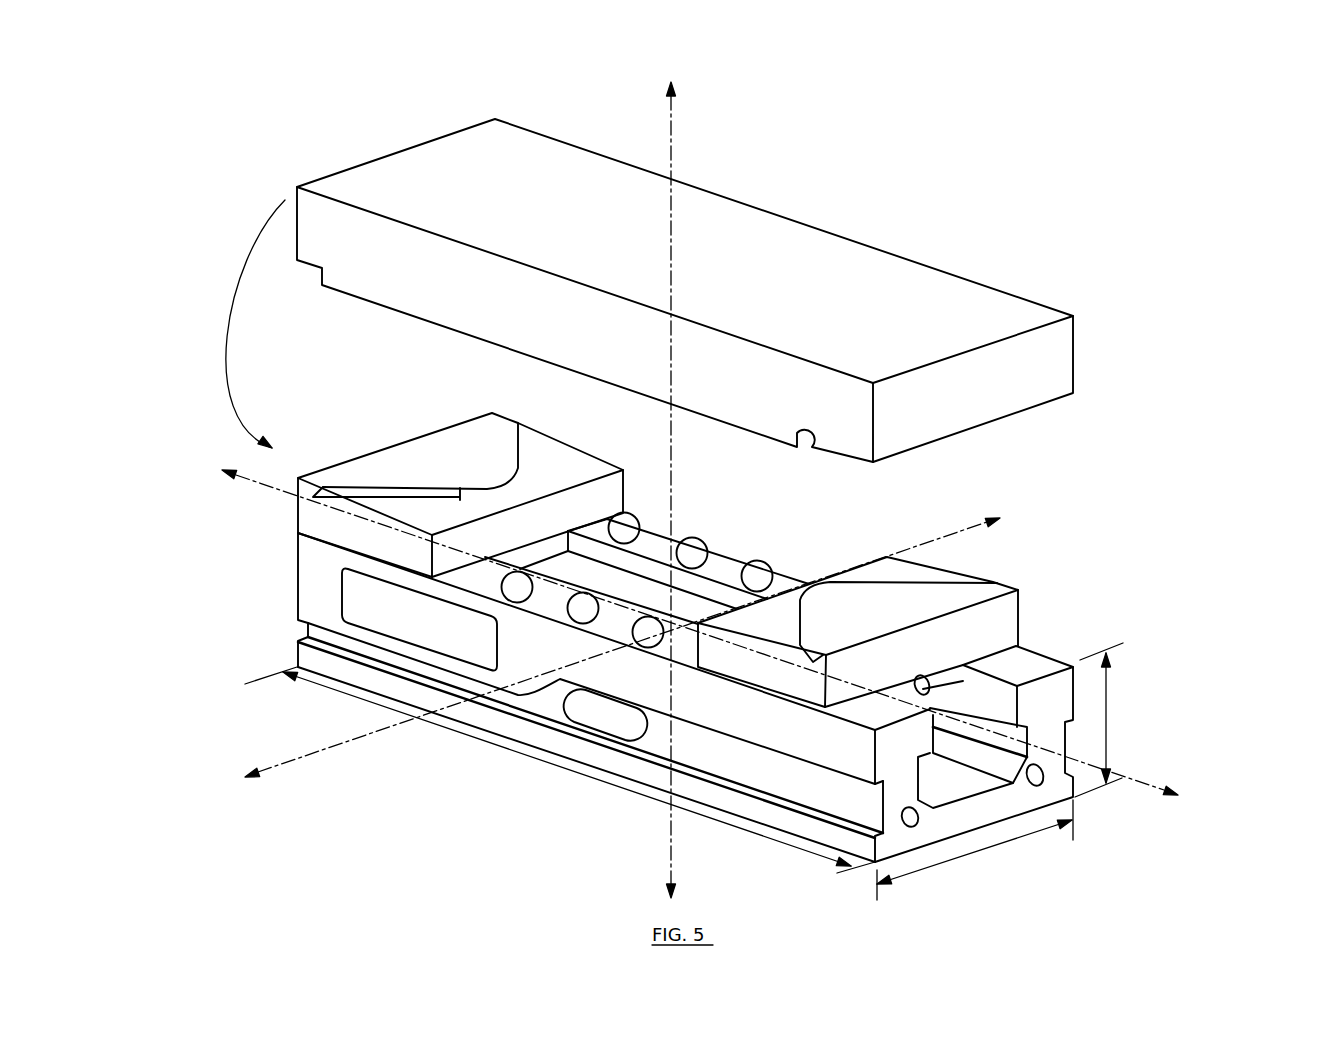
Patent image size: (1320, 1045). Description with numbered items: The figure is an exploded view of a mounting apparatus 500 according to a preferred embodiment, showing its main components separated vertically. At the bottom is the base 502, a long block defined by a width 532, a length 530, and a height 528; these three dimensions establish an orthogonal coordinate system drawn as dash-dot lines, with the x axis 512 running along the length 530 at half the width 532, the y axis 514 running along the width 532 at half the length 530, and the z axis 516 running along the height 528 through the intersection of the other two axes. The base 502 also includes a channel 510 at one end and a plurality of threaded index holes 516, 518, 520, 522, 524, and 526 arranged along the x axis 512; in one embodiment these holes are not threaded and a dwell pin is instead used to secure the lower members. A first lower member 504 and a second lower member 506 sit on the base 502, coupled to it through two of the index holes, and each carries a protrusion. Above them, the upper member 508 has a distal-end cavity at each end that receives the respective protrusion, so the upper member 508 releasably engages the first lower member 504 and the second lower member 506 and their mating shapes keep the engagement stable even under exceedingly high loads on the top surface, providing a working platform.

The mounting apparatus 500 is at (1192, 125).
The base 502 is at (480, 724).
The first lower member 504 is at (453, 443).
The second lower member 506 is at (943, 597).
The upper member 508 is at (800, 220).
The channel 510 is at (1005, 778).
The x axis 512 is at (1140, 778).
The y axis 514 is at (273, 773).
The z axis 516 is at (670, 140).
The threaded index hole 518 is at (723, 540).
The threaded index hole 520 is at (640, 519).
The threaded index hole 522 is at (512, 603).
The threaded index hole 524 is at (581, 625).
The threaded index hole 526 is at (652, 650).
The height 528 is at (1107, 717).
The length 530 is at (658, 818).
The width 532 is at (975, 853).